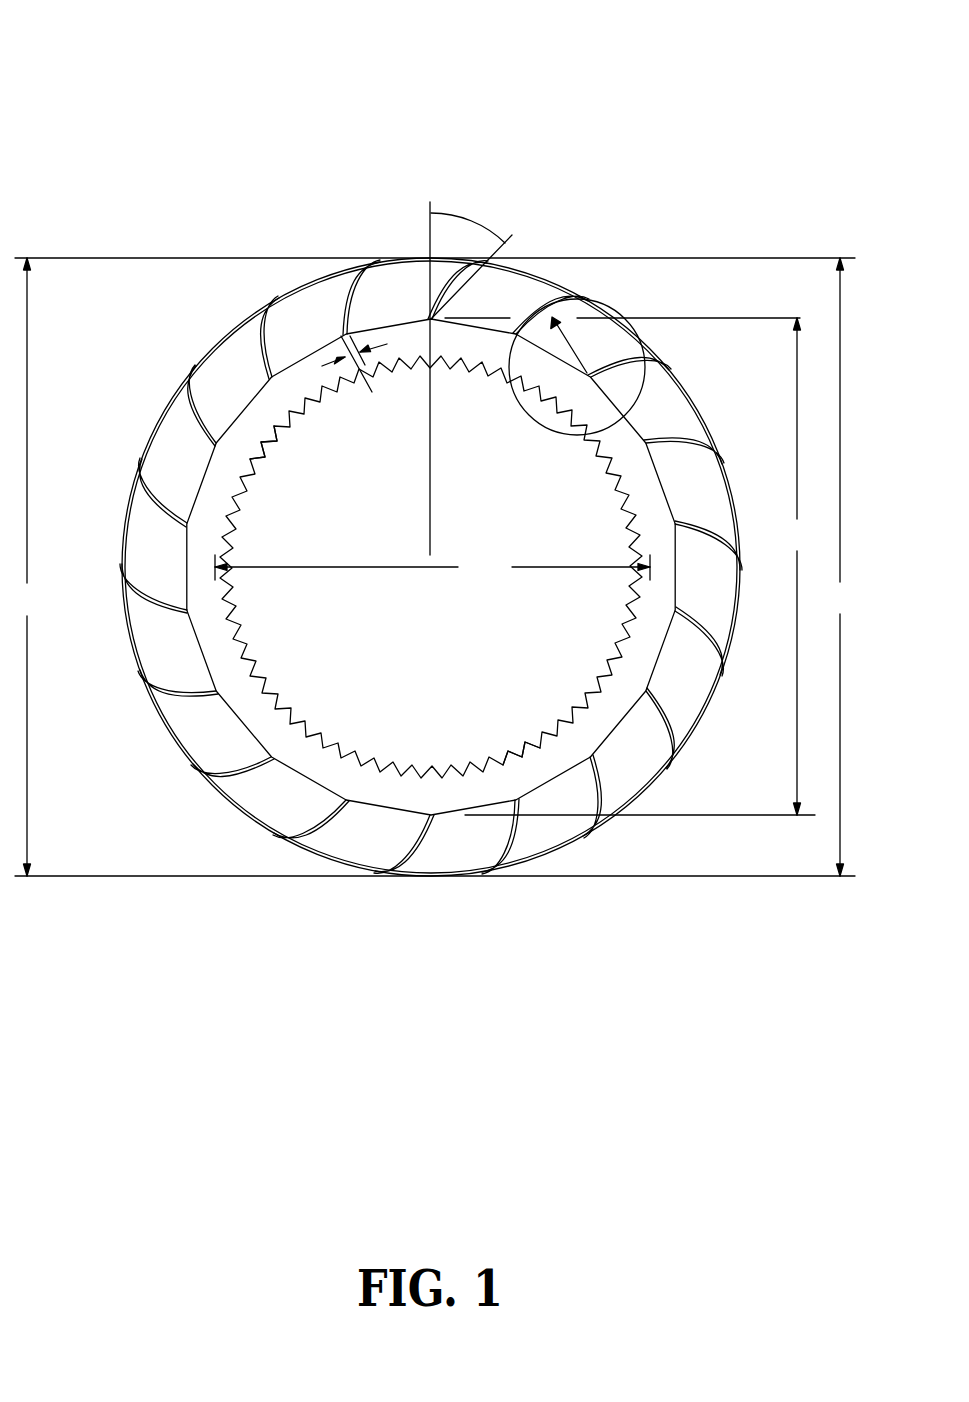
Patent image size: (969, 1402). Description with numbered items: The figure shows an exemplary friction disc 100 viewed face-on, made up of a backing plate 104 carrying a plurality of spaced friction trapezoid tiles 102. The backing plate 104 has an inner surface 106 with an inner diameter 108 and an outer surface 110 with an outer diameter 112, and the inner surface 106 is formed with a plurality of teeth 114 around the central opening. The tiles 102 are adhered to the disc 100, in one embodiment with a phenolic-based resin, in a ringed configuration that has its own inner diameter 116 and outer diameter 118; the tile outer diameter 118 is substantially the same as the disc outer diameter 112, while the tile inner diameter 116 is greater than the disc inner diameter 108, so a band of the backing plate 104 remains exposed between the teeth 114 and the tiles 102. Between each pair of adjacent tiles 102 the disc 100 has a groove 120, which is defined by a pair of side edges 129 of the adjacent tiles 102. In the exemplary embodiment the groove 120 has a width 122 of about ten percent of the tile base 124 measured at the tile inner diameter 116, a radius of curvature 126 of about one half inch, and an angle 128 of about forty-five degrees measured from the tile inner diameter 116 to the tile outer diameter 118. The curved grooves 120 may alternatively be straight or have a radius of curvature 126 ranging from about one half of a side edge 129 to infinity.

The friction disc 100 is at (180, 110).
The friction trapezoid tiles 102 is at (667, 413).
The backing plate 104 is at (428, 807).
The inner surface 106 is at (537, 747).
The inner diameter 108 is at (432, 565).
The outer surface 110 is at (175, 740).
The outer diameter 112 is at (25, 567).
The teeth 114 is at (252, 487).
The inner diameter 116 is at (631, 566).
The outer diameter 118 is at (837, 567).
The groove 120 is at (348, 305).
The width 122 is at (357, 350).
The tile base 124 is at (265, 435).
The radius of curvature 126 is at (577, 367).
The angle 128 is at (471, 371).
The side edges 129 is at (283, 307).